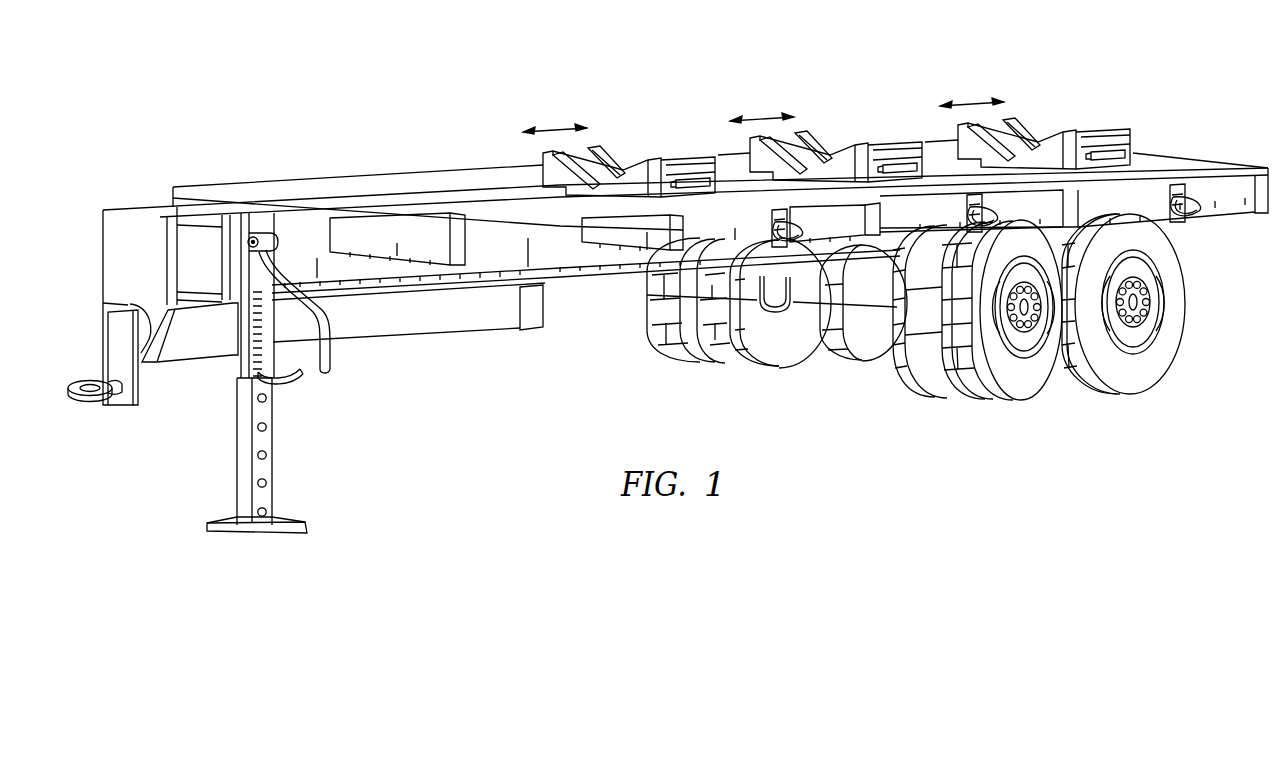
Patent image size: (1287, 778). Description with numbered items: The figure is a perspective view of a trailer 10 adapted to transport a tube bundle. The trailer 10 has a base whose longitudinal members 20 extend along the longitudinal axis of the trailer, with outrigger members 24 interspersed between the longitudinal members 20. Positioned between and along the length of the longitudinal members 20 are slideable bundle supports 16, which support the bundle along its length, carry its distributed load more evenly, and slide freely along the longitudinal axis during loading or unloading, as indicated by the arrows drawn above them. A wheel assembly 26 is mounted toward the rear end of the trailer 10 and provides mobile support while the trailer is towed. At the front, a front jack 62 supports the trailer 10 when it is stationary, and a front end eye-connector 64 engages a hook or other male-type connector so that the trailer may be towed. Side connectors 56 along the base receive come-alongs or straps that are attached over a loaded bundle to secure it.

The trailer 10 is at (996, 54).
The slideable bundle support 16 is at (548, 164).
The longitudinal member 20 is at (490, 228).
The outrigger member 24 is at (630, 233).
The wheel assembly 26 is at (1015, 388).
The side connector 56 is at (800, 236).
The front jack 62 is at (237, 366).
The front end eye-connector 64 is at (98, 400).